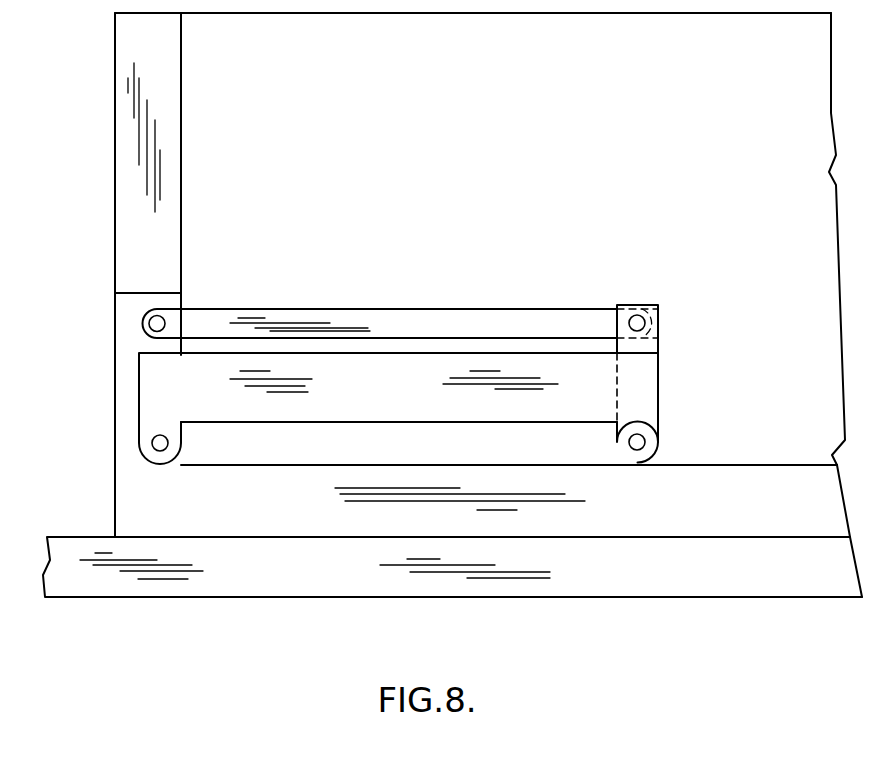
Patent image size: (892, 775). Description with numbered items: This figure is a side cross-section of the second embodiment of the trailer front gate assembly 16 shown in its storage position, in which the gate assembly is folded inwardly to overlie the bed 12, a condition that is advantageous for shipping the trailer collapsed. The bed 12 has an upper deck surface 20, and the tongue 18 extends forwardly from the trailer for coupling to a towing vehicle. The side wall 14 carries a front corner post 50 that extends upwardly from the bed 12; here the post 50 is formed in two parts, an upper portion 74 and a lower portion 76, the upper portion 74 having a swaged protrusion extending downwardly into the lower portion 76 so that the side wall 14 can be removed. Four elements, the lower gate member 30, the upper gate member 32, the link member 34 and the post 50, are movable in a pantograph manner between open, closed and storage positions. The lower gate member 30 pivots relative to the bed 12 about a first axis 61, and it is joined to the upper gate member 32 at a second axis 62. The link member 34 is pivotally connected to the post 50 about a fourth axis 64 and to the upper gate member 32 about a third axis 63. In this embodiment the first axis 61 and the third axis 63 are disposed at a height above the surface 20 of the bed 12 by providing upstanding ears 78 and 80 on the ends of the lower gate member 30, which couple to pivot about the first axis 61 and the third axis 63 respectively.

The bed 12 is at (603, 522).
The side wall 14 is at (407, 121).
The front gate assembly 16 is at (73, 302).
The tongue 18 is at (233, 587).
The upper deck surface 20 is at (762, 465).
The lower gate member 30 is at (365, 383).
The upper gate member 32 is at (658, 338).
The link member 34 is at (367, 313).
The front corner post 50 is at (107, 244).
The first axis 61 is at (152, 443).
The second axis 62 is at (645, 438).
The third axis 63 is at (637, 315).
The fourth axis 64 is at (149, 323).
The upper portion 74 is at (172, 77).
The lower portion 76 is at (128, 343).
The upstanding ear 78 is at (182, 428).
The upstanding ear 80 is at (658, 452).